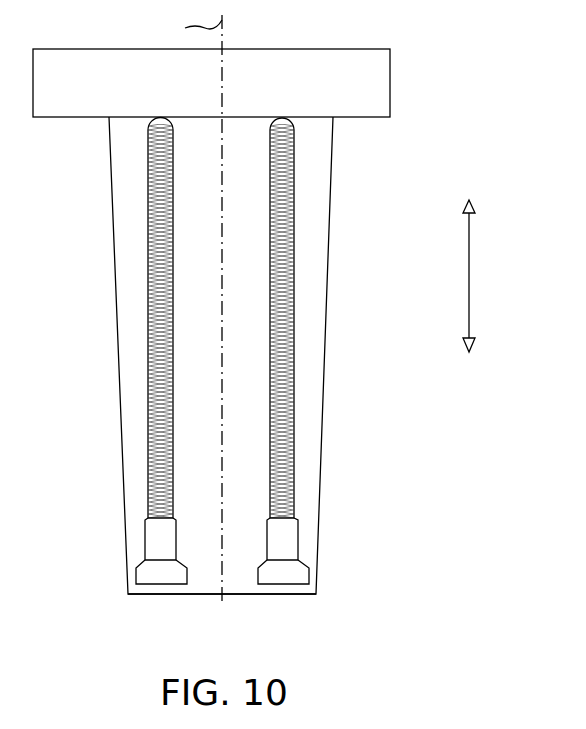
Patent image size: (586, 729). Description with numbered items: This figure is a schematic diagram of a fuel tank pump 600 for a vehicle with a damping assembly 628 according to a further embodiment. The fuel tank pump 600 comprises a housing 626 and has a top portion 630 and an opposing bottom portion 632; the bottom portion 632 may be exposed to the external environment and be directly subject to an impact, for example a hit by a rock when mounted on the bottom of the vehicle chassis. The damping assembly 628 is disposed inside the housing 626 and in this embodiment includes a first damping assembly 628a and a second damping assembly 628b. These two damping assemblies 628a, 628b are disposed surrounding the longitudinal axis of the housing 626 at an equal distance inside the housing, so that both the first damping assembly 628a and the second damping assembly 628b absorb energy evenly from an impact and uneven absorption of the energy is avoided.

The fuel tank pump 600 is at (455, 64).
The housing 626 is at (328, 310).
The damping assembly 628 is at (216, 389).
The first damping assembly 628a is at (148, 398).
The second damping assembly 628b is at (295, 398).
The top portion 630 is at (237, 100).
The bottom portion 632 is at (310, 594).